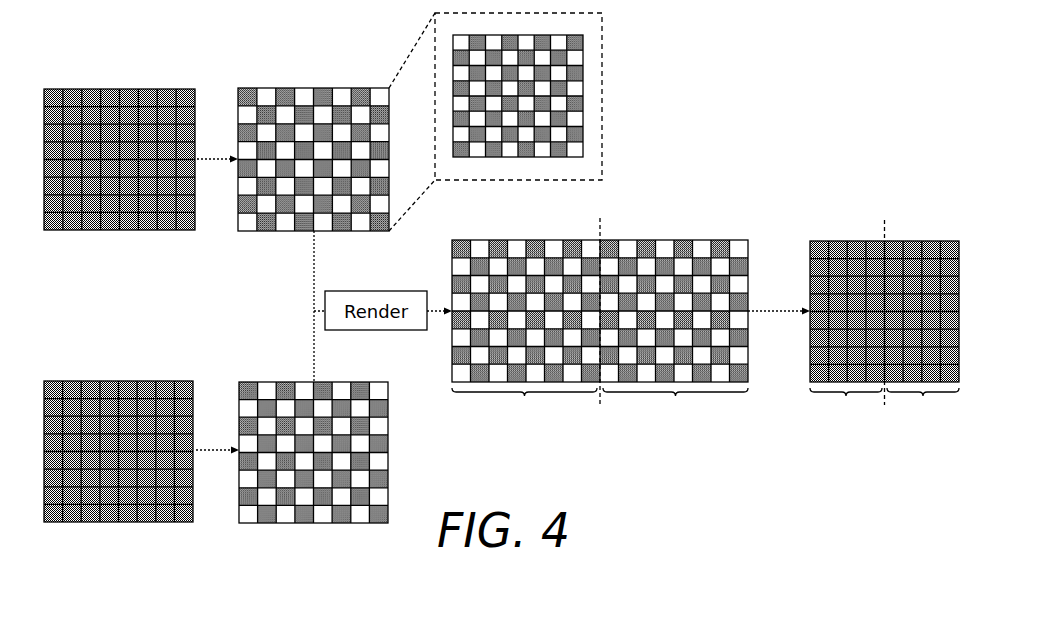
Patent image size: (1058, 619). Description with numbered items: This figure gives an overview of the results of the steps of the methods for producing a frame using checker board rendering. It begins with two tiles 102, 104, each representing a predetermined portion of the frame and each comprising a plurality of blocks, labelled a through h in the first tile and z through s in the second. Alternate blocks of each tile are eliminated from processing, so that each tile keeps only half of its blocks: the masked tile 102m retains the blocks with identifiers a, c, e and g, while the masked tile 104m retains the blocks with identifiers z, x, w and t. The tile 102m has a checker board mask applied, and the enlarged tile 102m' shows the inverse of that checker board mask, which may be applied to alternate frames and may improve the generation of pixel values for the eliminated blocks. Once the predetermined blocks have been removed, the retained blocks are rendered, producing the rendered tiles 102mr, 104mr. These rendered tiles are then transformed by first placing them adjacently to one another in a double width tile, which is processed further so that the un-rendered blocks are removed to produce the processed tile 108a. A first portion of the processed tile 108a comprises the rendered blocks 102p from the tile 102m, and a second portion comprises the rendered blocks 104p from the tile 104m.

The tile 102 is at (129, 88).
The tile 102m is at (313, 149).
The tile 102m' is at (546, 96).
The tile 104 is at (98, 381).
The tile 104m is at (288, 382).
The processed tile 108a is at (873, 229).
The rendered tile 102mr is at (526, 320).
The rendered tile 104mr is at (675, 405).
The rendered blocks 102p is at (847, 321).
The rendered blocks 104p is at (923, 405).